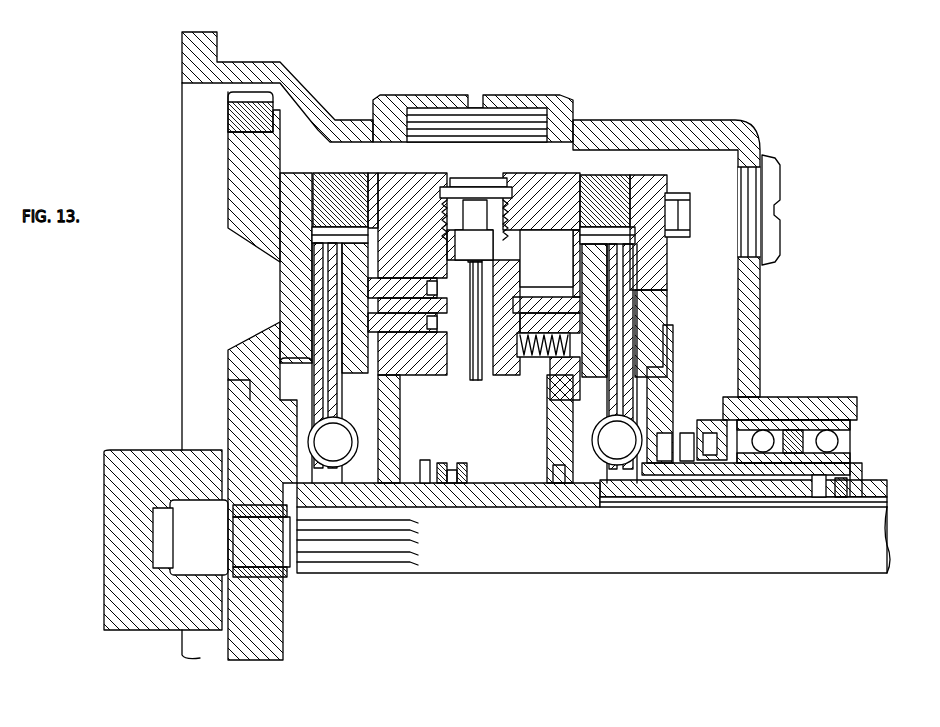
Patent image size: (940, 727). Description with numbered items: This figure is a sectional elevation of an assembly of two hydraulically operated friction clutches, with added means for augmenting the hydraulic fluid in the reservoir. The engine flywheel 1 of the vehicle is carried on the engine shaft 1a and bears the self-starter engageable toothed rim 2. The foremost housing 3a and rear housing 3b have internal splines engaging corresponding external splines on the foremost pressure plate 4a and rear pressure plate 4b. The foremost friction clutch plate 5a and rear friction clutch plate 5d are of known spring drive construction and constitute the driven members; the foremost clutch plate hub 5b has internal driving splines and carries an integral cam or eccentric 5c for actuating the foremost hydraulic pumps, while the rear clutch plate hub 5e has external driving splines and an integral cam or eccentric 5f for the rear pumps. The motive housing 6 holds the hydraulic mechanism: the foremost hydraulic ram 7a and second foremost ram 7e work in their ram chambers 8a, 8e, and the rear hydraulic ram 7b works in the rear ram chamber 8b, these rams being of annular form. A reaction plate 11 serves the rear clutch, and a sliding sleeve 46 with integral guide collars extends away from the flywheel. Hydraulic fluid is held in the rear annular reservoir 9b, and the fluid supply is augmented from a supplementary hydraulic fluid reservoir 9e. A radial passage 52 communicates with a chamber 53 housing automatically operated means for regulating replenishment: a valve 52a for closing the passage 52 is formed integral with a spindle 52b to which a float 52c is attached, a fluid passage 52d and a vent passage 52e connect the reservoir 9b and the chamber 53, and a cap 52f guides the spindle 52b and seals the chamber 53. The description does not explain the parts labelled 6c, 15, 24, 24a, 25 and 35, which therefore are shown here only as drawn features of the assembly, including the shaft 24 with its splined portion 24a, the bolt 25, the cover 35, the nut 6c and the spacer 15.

The engine flywheel 1 is at (228, 170).
The engine shaft 1a is at (128, 477).
The self-starter engageable toothed rim 2 is at (232, 113).
The foremost housing 3a is at (335, 178).
The rear housing 3b is at (630, 177).
The foremost pressure plate 4a is at (350, 290).
The rear pressure plate 4b is at (587, 281).
The foremost friction clutch plate 5a is at (312, 318).
The foremost clutch plate hub 5b is at (330, 490).
The cam or eccentric 5c is at (412, 480).
The rear friction clutch plate 5d is at (672, 340).
The rear clutch plate hub 5e is at (750, 470).
The cam or eccentric 5f is at (523, 480).
The motive housing 6 is at (402, 207).
The bolt 6c is at (680, 220).
The foremost hydraulic ram 7a is at (375, 187).
The rear hydraulic ram 7b is at (580, 305).
The hydraulic ram 7e is at (400, 335).
The foremost annular ram chamber 8a is at (427, 282).
The rear annular ram chamber 8b is at (546, 258).
The ram chamber 8e is at (437, 330).
The rear annular reservoir 9b is at (590, 203).
The supplementary hydraulic fluid reservoir 9e is at (443, 450).
The reaction plate 11 is at (660, 260).
The spacer 15 is at (855, 490).
The shaft 24 is at (593, 540).
The splined shaft portion 24a is at (360, 543).
The bolt 25 is at (221, 538).
The cover 35 is at (259, 80).
The sliding sleeve 46 is at (753, 498).
The radial passage 52 is at (476, 380).
The valve 52a is at (455, 210).
The spindle 52b is at (478, 205).
The float 52c is at (470, 210).
The fluid passage 52d is at (565, 250).
The vent passage 52e is at (497, 247).
The cap 52f is at (495, 195).
The chamber 53 is at (540, 352).